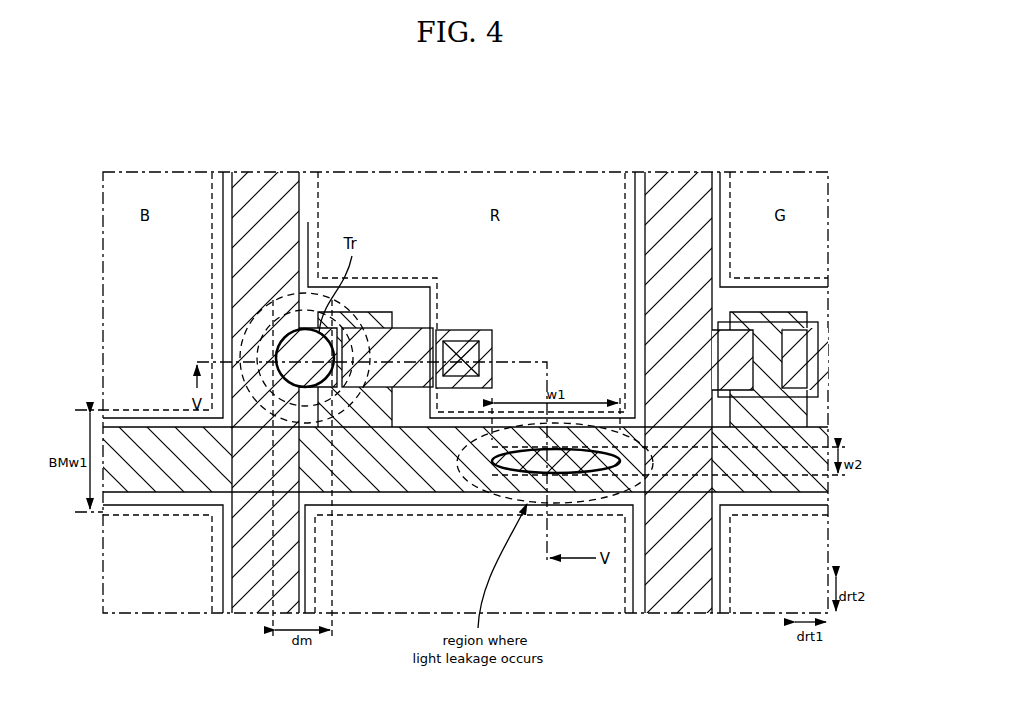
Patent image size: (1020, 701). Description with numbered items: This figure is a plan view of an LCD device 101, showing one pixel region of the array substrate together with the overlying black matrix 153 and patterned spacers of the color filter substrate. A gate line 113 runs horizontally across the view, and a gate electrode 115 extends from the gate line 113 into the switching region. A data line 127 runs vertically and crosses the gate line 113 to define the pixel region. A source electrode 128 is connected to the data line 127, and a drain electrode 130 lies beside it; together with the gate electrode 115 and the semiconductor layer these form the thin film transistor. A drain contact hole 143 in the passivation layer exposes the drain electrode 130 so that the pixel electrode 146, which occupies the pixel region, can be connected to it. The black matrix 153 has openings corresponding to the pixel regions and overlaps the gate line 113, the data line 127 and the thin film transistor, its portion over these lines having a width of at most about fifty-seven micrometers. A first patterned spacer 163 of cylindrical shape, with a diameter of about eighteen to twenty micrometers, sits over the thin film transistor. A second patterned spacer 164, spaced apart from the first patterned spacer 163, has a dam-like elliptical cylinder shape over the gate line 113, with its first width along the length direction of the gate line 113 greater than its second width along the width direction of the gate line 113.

The LCD device 101 is at (790, 125).
The gate line 113 is at (392, 486).
The gate electrode 115 is at (367, 352).
The data line 127 is at (263, 277).
The source electrode 128 is at (324, 395).
The drain electrode 130 is at (410, 348).
The drain contact hole 143 is at (480, 349).
The pixel electrode 146 is at (306, 223).
The black matrix 153 is at (211, 323).
The first patterned spacer 163 is at (278, 341).
The second patterned spacer 164 is at (560, 460).